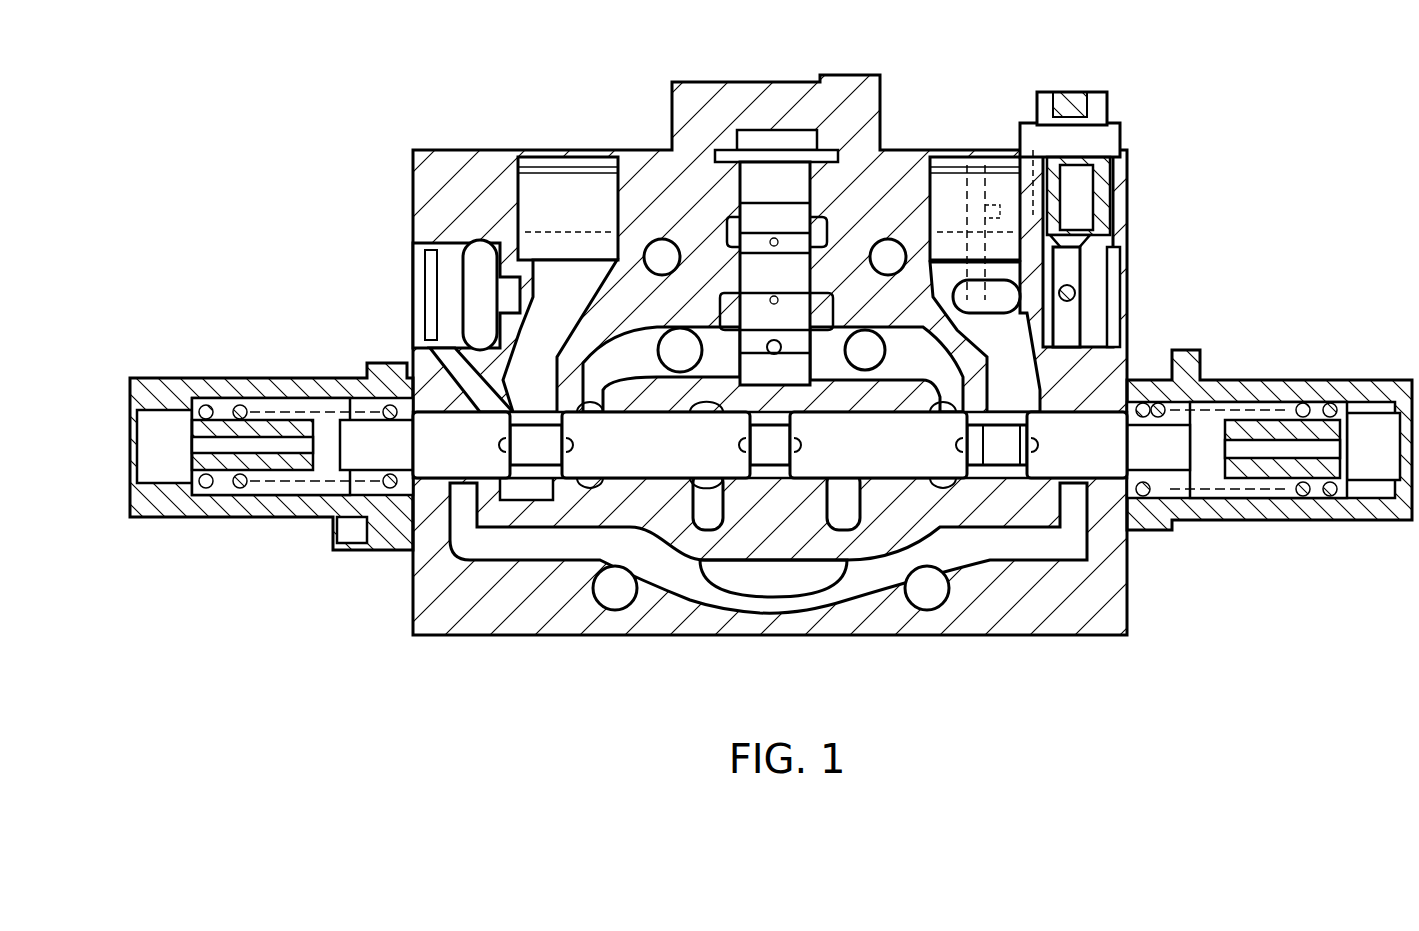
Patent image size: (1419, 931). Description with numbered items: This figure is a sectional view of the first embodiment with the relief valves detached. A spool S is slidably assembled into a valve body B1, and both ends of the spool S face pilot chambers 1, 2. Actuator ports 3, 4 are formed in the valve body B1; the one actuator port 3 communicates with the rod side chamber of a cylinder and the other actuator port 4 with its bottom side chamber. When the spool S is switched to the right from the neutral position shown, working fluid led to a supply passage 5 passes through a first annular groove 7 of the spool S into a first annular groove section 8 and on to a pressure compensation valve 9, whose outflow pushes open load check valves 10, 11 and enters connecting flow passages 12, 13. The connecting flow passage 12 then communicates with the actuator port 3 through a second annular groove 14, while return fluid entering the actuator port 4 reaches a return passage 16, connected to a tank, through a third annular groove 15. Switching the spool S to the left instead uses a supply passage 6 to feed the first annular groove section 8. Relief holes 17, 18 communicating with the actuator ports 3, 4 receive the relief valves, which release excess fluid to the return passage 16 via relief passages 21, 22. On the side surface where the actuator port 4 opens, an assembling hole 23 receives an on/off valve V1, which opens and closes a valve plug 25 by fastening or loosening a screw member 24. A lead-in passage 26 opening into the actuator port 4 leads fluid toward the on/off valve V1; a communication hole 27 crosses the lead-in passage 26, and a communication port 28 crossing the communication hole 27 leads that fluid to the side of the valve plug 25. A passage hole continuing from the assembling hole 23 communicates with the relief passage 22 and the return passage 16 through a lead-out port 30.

The pilot chamber 1 is at (330, 455).
The pilot chamber 2 is at (1215, 470).
The actuator port 3 is at (550, 185).
The actuator port 4 is at (940, 162).
The supply passage 5 is at (850, 462).
The supply passage 6 is at (705, 520).
The first annular groove 7 is at (777, 470).
The first annular groove section 8 is at (752, 465).
The pressure compensation valve 9 is at (766, 265).
The load check valve 10 is at (680, 345).
The load check valve 11 is at (852, 345).
The connecting flow passage 12 is at (590, 395).
The connecting flow passage 13 is at (945, 480).
The second annular groove 14 is at (530, 480).
The third annular groove 15 is at (1000, 480).
The return passage 16 is at (1045, 555).
The relief hole 17 is at (428, 288).
The relief hole 18 is at (1120, 272).
The relief passage 21 is at (476, 200).
The relief passage 22 is at (1083, 262).
The assembling hole 23 is at (1097, 200).
The screw member 24 is at (1068, 90).
The valve plug 25 is at (1090, 240).
The lead-in passage 26 is at (905, 240).
The communication hole 27 is at (975, 165).
The communication port 28 is at (1030, 150).
The lead-out port 30 is at (1077, 293).
The spool S is at (632, 565).
The valve body B1 is at (432, 136).
The on/off valve V1 is at (1126, 125).